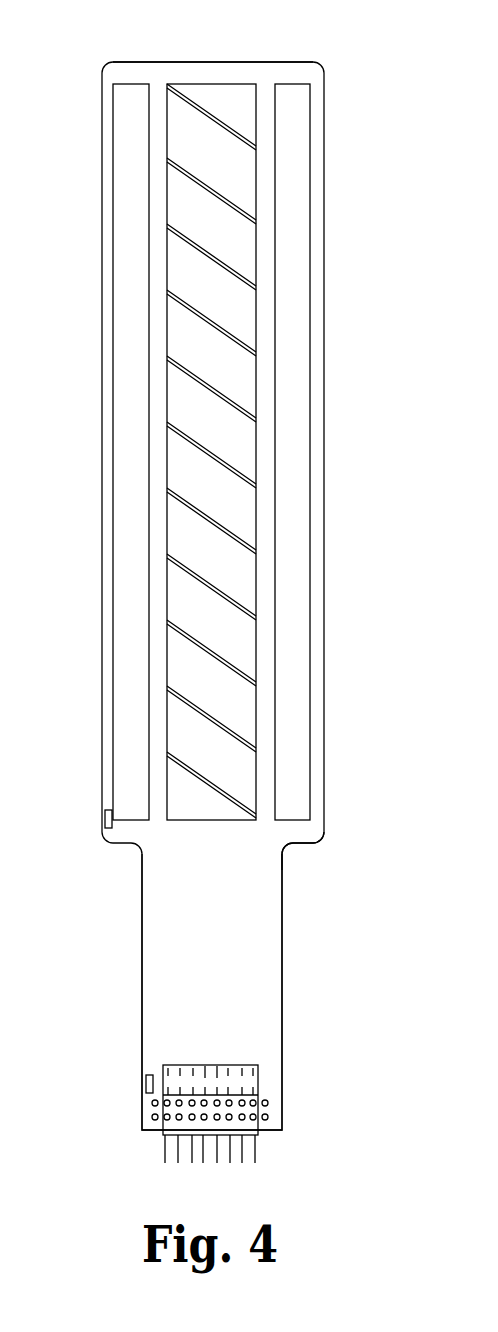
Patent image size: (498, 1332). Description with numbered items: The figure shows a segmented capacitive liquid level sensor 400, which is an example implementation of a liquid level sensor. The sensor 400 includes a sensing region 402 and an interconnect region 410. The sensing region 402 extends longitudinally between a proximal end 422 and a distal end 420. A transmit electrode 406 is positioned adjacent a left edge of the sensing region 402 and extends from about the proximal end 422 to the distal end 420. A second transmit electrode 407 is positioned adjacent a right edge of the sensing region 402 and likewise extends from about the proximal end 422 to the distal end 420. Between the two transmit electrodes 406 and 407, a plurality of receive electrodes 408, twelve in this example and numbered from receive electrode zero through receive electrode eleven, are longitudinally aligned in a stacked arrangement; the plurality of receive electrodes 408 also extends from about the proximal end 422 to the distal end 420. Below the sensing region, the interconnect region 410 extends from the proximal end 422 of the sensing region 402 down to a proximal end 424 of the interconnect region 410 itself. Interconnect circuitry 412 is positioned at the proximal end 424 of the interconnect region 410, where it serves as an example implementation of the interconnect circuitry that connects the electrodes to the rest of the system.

The segmented capacitive liquid level sensor 400 is at (207, 599).
The sensing region 402 is at (102, 248).
The transmit electrode 406 is at (130, 167).
The transmit electrode 407 is at (296, 168).
The receive electrodes 408 is at (245, 498).
The interconnect region 410 is at (142, 966).
The interconnect circuitry 412 is at (160, 1153).
The distal end 420 is at (172, 62).
The proximal end 422 is at (300, 843).
The proximal end 424 is at (272, 1135).